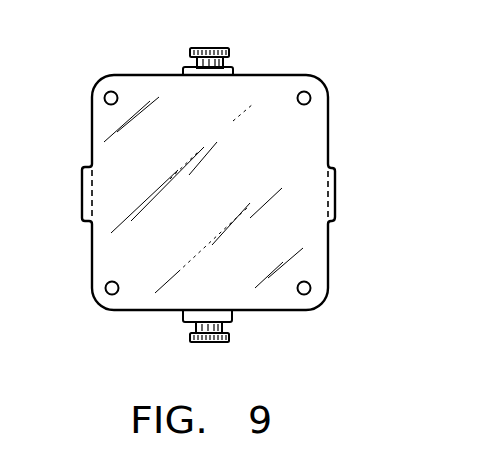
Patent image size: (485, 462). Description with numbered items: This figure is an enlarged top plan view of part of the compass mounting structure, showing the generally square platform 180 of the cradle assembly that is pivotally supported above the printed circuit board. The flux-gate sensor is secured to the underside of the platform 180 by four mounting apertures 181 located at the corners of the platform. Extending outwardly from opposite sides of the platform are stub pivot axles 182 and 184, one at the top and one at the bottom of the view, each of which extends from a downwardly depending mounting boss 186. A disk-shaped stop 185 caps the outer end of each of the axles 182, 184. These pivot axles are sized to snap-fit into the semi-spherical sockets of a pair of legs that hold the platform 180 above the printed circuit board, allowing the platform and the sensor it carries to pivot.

The platform 180 is at (329, 138).
The mounting apertures 181 is at (104, 97).
The stub pivot axle 182 is at (232, 63).
The stub pivot axle 184 is at (225, 325).
The disk-shaped stop 185 is at (230, 52).
The mounting boss 186 is at (183, 71).